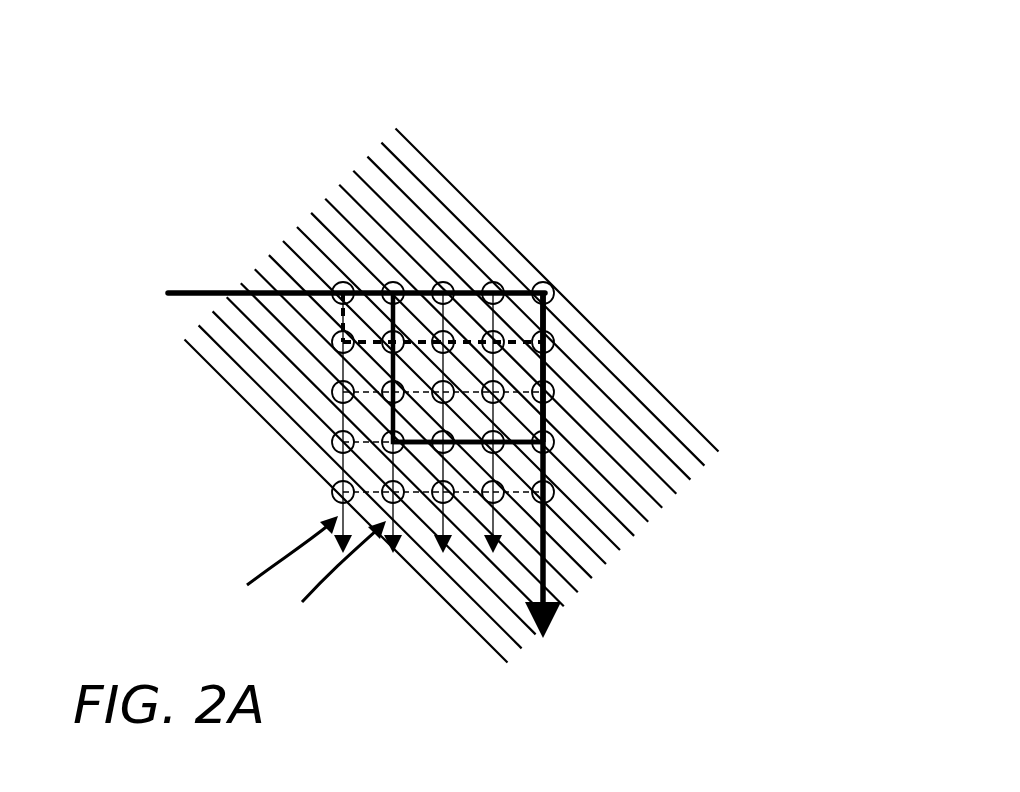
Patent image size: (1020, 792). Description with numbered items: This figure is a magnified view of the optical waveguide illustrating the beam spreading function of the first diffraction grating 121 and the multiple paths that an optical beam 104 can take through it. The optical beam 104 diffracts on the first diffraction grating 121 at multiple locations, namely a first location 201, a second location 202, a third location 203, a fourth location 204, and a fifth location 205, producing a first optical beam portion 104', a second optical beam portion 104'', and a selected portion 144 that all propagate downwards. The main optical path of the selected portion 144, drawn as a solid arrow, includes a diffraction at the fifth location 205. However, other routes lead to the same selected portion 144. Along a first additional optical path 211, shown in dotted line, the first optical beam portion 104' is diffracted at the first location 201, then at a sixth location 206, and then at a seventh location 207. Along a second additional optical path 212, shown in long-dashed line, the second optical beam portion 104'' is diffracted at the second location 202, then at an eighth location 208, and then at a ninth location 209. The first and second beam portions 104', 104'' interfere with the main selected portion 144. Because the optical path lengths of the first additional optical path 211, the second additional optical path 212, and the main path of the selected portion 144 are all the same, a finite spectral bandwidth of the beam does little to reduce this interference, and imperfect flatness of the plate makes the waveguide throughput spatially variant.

The optical beam 104 is at (356, 221).
The first optical beam portion 104' is at (268, 566).
The second optical beam portion 104'' is at (319, 578).
The first diffraction grating 121 is at (677, 408).
The selected portion 144 is at (547, 577).
The first location 201 is at (343, 283).
The second location 202 is at (393, 283).
The third location 203 is at (443, 283).
The fourth location 204 is at (493, 283).
The fifth location 205 is at (543, 283).
The sixth location 206 is at (357, 347).
The seventh location 207 is at (547, 330).
The eighth location 208 is at (332, 484).
The ninth location 209 is at (547, 432).
The first additional optical path 211 is at (340, 328).
The second additional optical path 212 is at (470, 445).